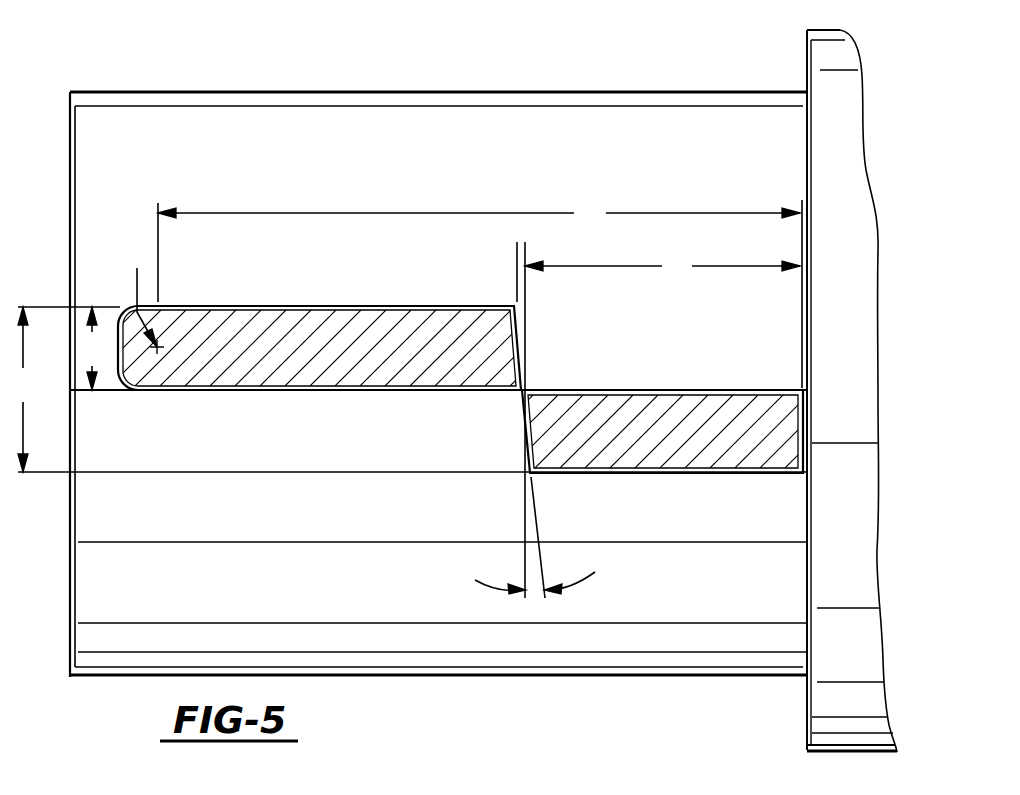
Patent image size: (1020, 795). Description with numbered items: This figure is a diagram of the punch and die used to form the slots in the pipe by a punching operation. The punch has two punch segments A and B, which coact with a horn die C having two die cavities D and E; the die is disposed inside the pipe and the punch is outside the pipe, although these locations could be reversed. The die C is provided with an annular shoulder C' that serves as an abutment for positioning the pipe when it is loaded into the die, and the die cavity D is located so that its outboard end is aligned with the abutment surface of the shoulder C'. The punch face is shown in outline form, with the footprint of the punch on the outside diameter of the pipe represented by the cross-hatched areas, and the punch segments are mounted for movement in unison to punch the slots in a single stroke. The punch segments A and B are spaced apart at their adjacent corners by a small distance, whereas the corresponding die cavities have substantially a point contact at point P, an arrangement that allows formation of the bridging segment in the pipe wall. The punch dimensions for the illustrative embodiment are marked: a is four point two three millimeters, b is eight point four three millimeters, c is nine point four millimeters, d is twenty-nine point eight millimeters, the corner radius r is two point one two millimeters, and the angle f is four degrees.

The horn die C is at (412, 346).
The annular shoulder C' is at (795, 391).
The punch segment B is at (385, 318).
The die cavity E is at (328, 392).
The punch segment A is at (620, 405).
The die cavity D is at (625, 475).
The point of contact P is at (524, 394).
The punch dimension d is at (480, 294).
The punch dimension c is at (662, 267).
The punch dimension a is at (89, 348).
The punch dimension b is at (23, 389).
The punch angle f is at (535, 591).
The punch corner radius r is at (147, 297).